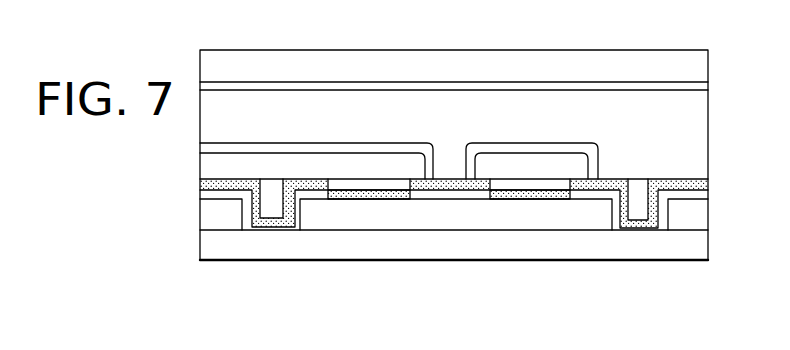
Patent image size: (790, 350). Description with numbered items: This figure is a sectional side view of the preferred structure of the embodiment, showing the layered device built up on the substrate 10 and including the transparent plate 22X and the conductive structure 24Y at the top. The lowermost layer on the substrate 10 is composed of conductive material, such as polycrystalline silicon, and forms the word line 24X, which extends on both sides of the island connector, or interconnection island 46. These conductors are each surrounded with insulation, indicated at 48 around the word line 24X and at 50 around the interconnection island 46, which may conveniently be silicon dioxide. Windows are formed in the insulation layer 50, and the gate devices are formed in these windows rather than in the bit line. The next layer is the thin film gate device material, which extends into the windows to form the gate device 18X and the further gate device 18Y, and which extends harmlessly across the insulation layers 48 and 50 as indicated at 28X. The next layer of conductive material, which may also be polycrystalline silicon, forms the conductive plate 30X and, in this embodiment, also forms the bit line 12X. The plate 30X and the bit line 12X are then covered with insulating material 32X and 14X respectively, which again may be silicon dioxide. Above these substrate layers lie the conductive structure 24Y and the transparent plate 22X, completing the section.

The substrate 10 is at (323, 238).
The bit line 12X is at (518, 148).
The insulating material 14X is at (611, 152).
The gate device 18X is at (368, 194).
The electrode 18Y is at (510, 194).
The transparent plate 22X is at (608, 63).
The word line 24X is at (218, 220).
The conductive structure 24Y is at (457, 86).
The thin film gate device material 28X is at (628, 222).
The conductive plate 30X is at (306, 158).
The insulating material 32X is at (398, 148).
The interconnection island 46 is at (433, 220).
The insulation 48 is at (208, 193).
The insulation layer 50 is at (297, 222).